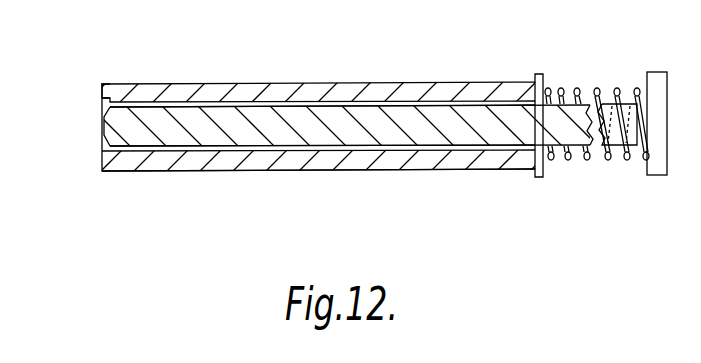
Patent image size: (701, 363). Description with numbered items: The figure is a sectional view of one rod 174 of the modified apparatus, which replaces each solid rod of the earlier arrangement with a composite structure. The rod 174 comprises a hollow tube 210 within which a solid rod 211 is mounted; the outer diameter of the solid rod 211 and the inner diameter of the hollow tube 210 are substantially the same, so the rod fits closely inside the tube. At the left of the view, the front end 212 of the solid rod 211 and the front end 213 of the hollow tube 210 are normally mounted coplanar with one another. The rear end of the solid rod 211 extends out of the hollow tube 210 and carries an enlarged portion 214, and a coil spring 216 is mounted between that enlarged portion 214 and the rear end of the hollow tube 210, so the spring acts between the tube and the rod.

The rod 174 is at (268, 175).
The hollow tube 210 is at (305, 90).
The solid rod 211 is at (423, 127).
The front end of the solid rod 212 is at (101, 126).
The front end of the hollow tube 213 is at (101, 85).
The enlarged portion 214 is at (658, 72).
The coil spring 216 is at (630, 150).